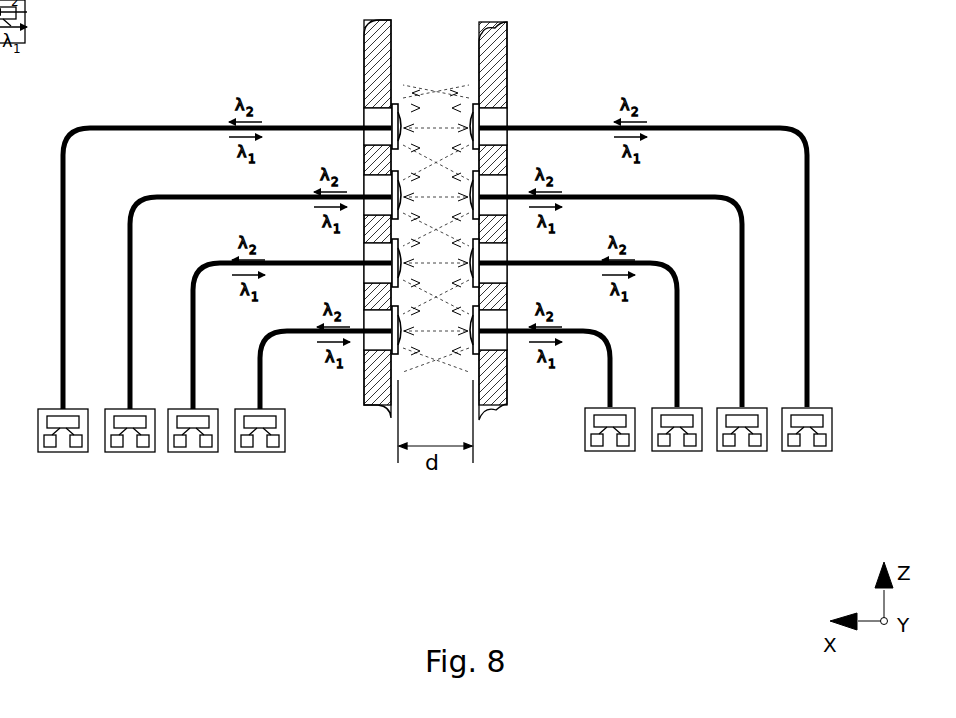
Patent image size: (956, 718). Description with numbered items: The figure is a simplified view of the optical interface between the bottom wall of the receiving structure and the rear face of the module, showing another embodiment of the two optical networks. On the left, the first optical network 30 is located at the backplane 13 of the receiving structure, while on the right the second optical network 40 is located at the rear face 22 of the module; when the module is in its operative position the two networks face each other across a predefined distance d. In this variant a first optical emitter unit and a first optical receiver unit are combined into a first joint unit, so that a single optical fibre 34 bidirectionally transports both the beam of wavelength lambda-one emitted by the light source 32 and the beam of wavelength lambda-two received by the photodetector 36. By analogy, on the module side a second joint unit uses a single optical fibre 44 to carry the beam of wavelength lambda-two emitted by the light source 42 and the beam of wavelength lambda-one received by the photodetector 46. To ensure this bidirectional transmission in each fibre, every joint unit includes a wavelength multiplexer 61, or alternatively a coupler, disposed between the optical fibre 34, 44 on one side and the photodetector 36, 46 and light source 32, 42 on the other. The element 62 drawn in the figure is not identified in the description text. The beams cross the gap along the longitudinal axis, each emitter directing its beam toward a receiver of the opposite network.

The backplane 13 is at (372, 58).
The rear face 22 is at (500, 68).
The first optical network 30 is at (103, 90).
The second optical network 40 is at (818, 105).
The optical fibre 34 is at (125, 218).
The optical fibre 44 is at (808, 232).
The wavelength multiplexer 61 is at (56, 420).
The light source 32 is at (53, 448).
The photodetector 36 is at (76, 448).
The light source 42 is at (600, 447).
The photodetector 46 is at (624, 447).
The light source of transceiver module 62 is at (667, 447).